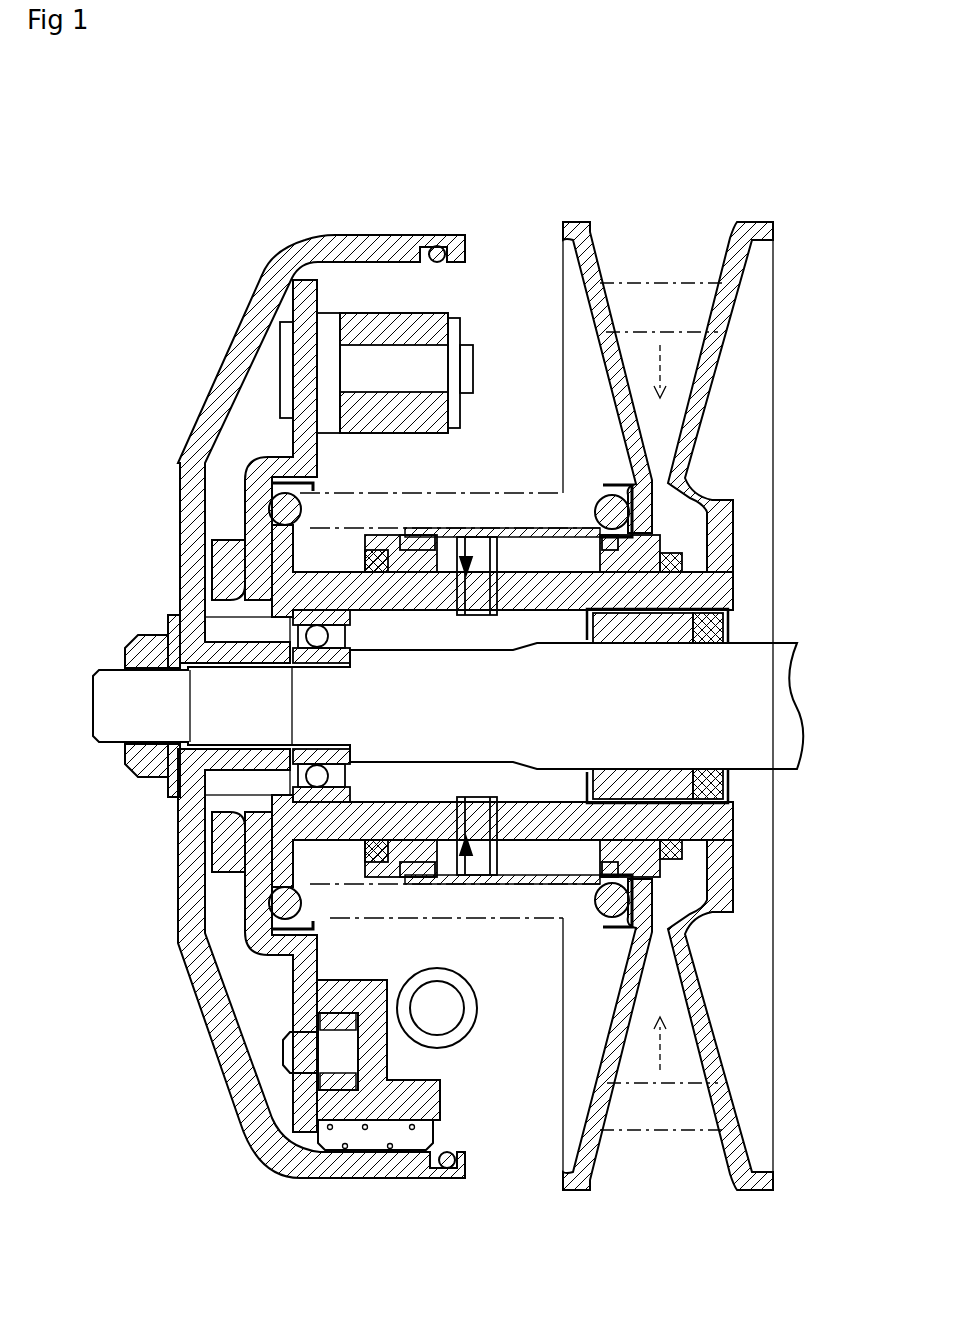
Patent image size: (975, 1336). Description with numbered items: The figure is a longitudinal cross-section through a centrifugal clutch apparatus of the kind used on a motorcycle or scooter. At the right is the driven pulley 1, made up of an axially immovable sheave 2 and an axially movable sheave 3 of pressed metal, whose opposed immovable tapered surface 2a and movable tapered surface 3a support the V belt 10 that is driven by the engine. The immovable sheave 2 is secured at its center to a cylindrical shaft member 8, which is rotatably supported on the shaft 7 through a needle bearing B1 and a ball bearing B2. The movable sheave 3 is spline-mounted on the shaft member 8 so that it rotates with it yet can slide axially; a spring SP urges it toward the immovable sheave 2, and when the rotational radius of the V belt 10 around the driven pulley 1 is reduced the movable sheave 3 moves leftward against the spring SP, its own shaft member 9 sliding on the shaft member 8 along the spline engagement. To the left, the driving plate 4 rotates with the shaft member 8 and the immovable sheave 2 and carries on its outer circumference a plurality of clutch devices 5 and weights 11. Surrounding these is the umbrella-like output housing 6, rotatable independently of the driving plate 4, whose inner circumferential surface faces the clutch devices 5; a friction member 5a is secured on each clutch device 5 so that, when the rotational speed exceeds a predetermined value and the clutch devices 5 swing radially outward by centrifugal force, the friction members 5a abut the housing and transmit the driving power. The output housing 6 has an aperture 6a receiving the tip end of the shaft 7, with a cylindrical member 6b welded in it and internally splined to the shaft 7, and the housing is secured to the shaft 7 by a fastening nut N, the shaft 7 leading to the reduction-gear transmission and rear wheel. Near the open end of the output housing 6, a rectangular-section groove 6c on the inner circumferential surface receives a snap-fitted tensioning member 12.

The driven pulley 1 is at (789, 202).
The immovable sheave 2 is at (742, 279).
The immovable tapered surface 2a is at (727, 1152).
The movable sheave 3 is at (582, 277).
The movable tapered surface 3a is at (601, 1155).
The driving plate 4 is at (250, 511).
The clutch device 5 is at (437, 1101).
The friction member 5a is at (365, 1142).
The output housing 6 is at (186, 913).
The aperture 6a is at (143, 656).
The cylindrical member 6b is at (242, 646).
The groove 6c is at (428, 266).
The shaft 7 is at (791, 688).
The shaft member 8 is at (724, 826).
The shaft member of movable sheave 9 is at (682, 868).
The V belt 10 is at (671, 283).
The weight 11 is at (368, 330).
The tensioning member 12 is at (449, 1167).
The needle bearing B1 is at (737, 627).
The ball bearing B2 is at (312, 830).
The fastening nut N is at (131, 761).
The spring SP is at (517, 922).